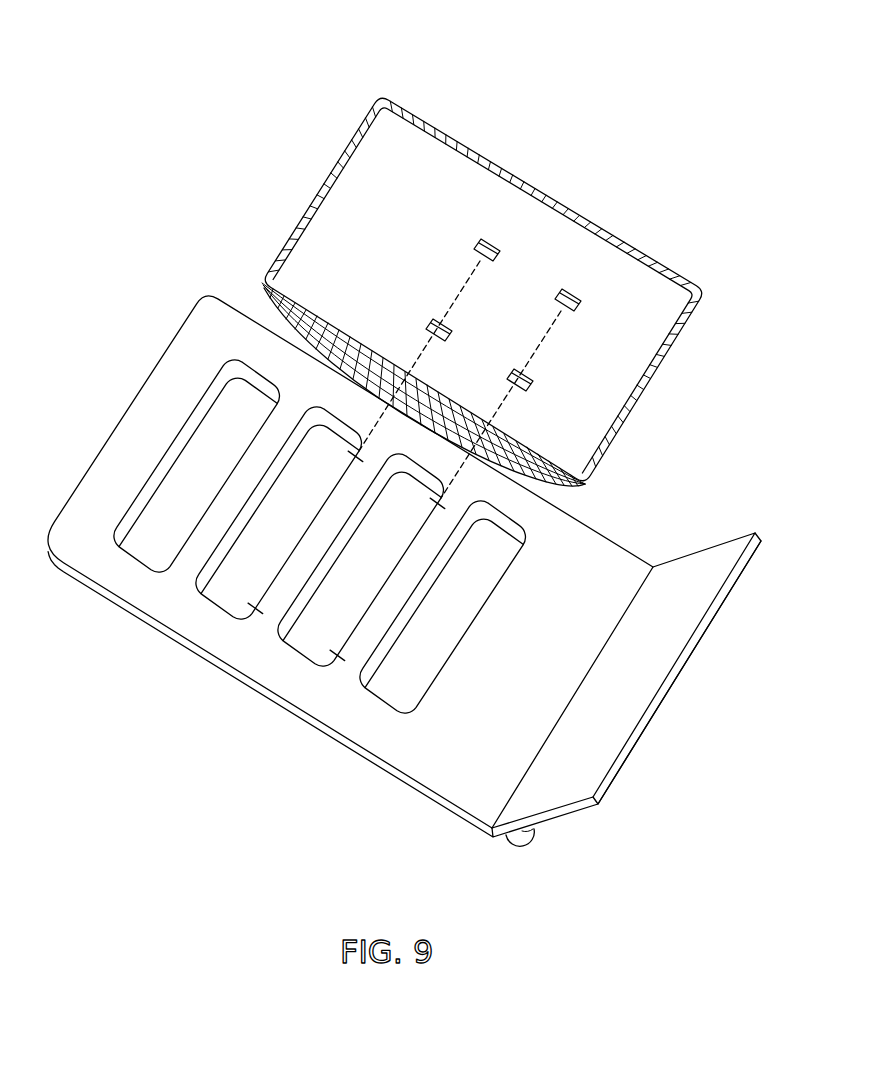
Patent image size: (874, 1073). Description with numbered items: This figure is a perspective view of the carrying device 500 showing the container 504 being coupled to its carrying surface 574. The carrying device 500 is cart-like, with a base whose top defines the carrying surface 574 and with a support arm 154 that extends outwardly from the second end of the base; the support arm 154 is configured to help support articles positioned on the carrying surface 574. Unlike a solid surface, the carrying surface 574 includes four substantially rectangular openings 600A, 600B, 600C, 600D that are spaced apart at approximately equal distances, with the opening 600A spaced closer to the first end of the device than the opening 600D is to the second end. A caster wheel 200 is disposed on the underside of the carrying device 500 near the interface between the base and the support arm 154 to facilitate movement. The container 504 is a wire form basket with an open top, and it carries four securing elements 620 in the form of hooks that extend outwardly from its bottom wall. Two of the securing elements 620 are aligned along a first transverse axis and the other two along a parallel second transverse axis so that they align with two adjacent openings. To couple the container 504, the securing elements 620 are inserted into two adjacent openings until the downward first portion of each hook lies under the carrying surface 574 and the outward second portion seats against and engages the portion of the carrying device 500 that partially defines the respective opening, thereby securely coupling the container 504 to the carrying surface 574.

The container 504 is at (383, 76).
The securing elements 620 is at (526, 186).
The opening 600A is at (190, 445).
The opening 600B is at (262, 503).
The opening 600C is at (398, 570).
The opening 600D is at (466, 632).
The carrying surface 574 is at (556, 660).
The support arm 154 is at (647, 670).
The carrying device 500 is at (400, 606).
The caster wheels 200 is at (529, 852).